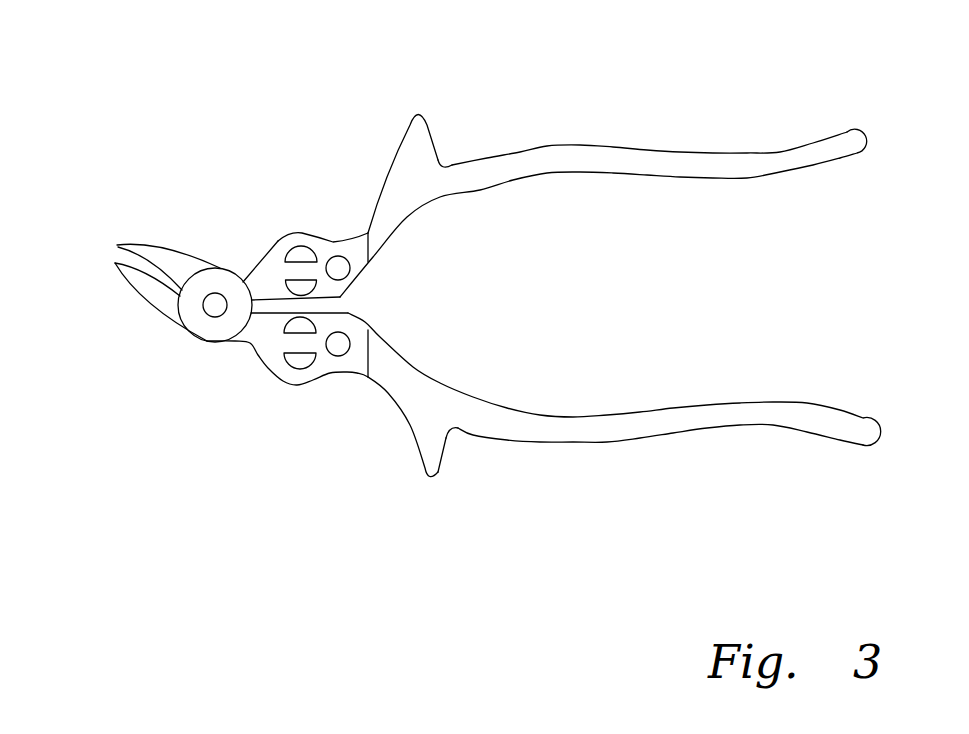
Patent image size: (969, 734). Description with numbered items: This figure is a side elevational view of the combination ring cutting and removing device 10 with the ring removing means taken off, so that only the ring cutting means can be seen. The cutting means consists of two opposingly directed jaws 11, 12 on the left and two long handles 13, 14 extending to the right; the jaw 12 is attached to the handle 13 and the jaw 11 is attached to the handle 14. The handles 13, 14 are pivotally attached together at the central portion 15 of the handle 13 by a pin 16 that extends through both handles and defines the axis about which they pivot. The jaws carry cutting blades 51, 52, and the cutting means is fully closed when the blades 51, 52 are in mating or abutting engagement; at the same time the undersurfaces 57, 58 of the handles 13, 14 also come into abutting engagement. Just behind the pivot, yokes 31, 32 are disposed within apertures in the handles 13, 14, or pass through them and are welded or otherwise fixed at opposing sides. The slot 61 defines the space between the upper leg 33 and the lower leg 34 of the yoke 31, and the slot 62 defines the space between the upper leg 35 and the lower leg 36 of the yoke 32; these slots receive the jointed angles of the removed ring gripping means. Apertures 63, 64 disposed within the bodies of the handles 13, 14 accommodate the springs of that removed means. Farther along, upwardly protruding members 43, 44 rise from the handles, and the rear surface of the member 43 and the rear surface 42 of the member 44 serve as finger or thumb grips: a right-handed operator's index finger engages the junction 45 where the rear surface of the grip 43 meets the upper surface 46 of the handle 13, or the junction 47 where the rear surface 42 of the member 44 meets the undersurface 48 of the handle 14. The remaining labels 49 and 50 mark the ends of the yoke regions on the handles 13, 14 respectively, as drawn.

The combination ring cutting and removing device 10 is at (632, 72).
The jaw 11 is at (160, 253).
The jaw 12 is at (158, 309).
The handle 13 is at (765, 165).
The handle 14 is at (750, 412).
The central portion 15 is at (216, 341).
The pin 16 is at (213, 307).
The yoke 31 is at (272, 260).
The yoke 32 is at (278, 352).
The upper leg 33 is at (283, 270).
The lower leg 34 is at (368, 261).
The upper leg 35 is at (298, 325).
The lower leg 36 is at (297, 370).
The rear surface 42 is at (441, 462).
The upwardly protruding member 43 is at (419, 130).
The upwardly protruding member 44 is at (428, 462).
The junction 45 is at (443, 166).
The upper surface 46 is at (632, 146).
The junction 47 is at (453, 430).
The undersurface 48 is at (617, 442).
The upper plate end 49 is at (368, 233).
The lower plate end 50 is at (363, 376).
The cutting blade 51 is at (113, 257).
The cutting blade 52 is at (113, 258).
The undersurface 57 is at (345, 300).
The undersurface 58 is at (350, 314).
The slot 61 is at (307, 272).
The slot 62 is at (320, 365).
The aperture 63 is at (312, 283).
The aperture 64 is at (345, 376).